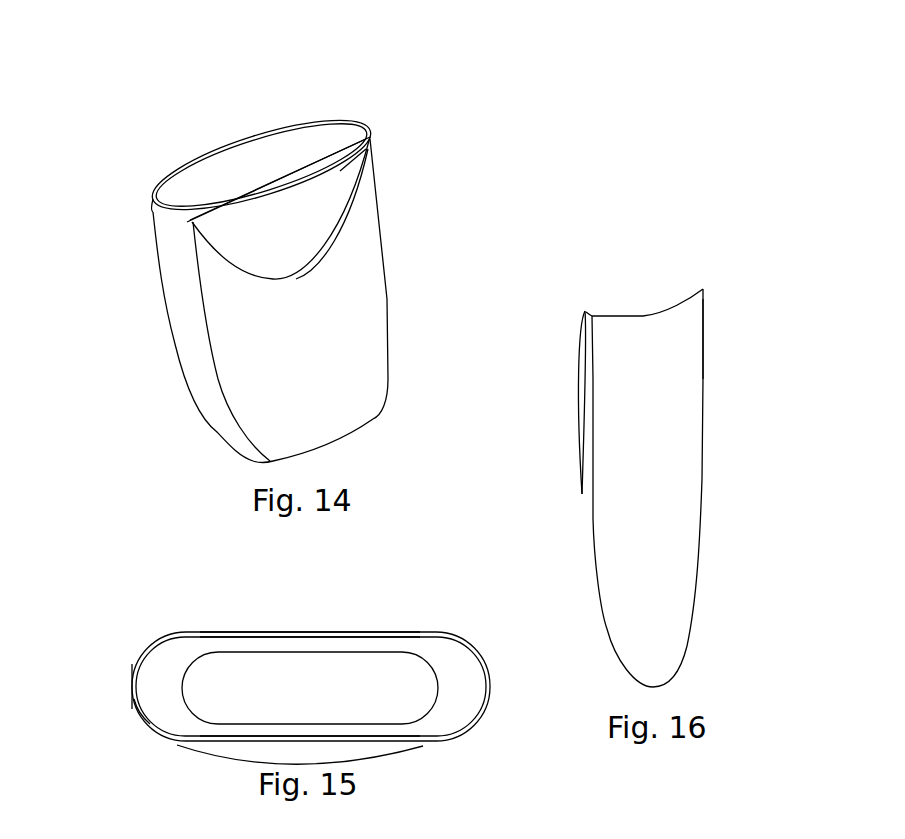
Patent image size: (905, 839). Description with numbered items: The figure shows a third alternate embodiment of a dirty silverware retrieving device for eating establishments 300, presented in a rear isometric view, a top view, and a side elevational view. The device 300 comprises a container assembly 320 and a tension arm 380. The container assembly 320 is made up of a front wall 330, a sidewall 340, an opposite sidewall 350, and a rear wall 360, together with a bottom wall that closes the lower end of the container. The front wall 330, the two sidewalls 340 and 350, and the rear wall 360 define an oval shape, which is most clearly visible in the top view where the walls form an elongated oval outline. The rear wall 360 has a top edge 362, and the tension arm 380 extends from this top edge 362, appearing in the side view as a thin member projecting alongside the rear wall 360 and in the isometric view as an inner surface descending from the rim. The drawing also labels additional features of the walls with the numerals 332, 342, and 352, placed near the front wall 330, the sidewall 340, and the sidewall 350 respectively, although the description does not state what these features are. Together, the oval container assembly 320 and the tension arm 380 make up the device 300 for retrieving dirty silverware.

In FIG. 14, the dirty silverware retrieving device for eating establishments 300 is at (418, 75).
In FIG. 15, the dirty silverware retrieving device for eating establishments 300 is at (152, 605).
In FIG. 16, the dirty silverware retrieving device for eating establishments 300 is at (725, 252).
In FIG. 14, the container assembly 320 is at (390, 232).
In FIG. 15, the container assembly 320 is at (348, 632).
In FIG. 16, the container assembly 320 is at (703, 427).
In FIG. 14, the front wall 330 is at (230, 163).
In FIG. 15, the front wall 330 is at (305, 635).
In FIG. 16, the front wall 330 is at (705, 348).
In FIG. 14, the top edge 332 is at (210, 155).
In FIG. 15, the top edge 332 is at (248, 637).
In FIG. 16, the top edge 332 is at (703, 290).
In FIG. 14, the sidewall 340 is at (178, 302).
In FIG. 15, the sidewall 340 is at (130, 693).
In FIG. 14, the end wall corner 342 is at (157, 215).
In FIG. 15, the end wall corner 342 is at (137, 707).
In FIG. 14, the sidewall 350 is at (367, 134).
In FIG. 15, the sidewall 350 is at (490, 678).
In FIG. 16, the sidewall 350 is at (648, 493).
In FIG. 14, the rim edge 352 is at (364, 127).
In FIG. 15, the rim edge 352 is at (488, 693).
In FIG. 16, the rim edge 352 is at (628, 318).
In FIG. 14, the rear wall 360 is at (333, 323).
In FIG. 16, the rear wall 360 is at (592, 525).
In FIG. 14, the top edge 362 is at (363, 163).
In FIG. 15, the top edge 362 is at (248, 740).
In FIG. 16, the top edge 362 is at (592, 317).
In FIG. 14, the tension arm 380 is at (367, 188).
In FIG. 15, the tension arm 380 is at (405, 757).
In FIG. 16, the tension arm 380 is at (575, 433).